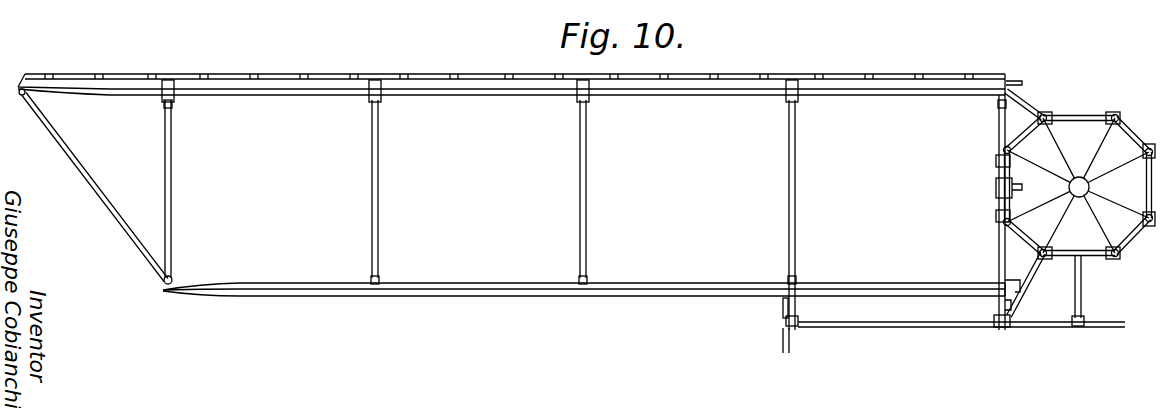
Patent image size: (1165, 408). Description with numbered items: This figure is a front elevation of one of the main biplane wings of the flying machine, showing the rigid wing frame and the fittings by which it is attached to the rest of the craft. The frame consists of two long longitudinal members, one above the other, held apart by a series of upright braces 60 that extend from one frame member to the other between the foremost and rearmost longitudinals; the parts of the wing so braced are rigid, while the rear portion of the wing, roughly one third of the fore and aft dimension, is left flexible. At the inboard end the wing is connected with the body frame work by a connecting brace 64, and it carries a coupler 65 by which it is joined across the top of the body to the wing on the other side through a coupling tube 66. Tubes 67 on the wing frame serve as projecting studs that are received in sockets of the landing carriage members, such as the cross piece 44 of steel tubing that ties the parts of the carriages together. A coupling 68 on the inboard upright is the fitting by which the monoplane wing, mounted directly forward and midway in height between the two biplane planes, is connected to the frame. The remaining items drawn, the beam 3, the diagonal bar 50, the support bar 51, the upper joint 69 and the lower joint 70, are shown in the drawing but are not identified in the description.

The longitudinal beam 3 is at (516, 73).
The cross pieces 44 is at (906, 329).
The diagonal brace bar 50 is at (1021, 300).
The vertical support bar 51 is at (1083, 288).
The upright braces 60 is at (172, 186).
The connecting braces 64 is at (1016, 280).
The couplers 65 is at (1012, 81).
The coupling tube 66 is at (1030, 100).
The tubes 67 is at (797, 306).
The couplings 68 is at (996, 188).
The upper joint 69 is at (172, 108).
The lower joint 70 is at (175, 280).